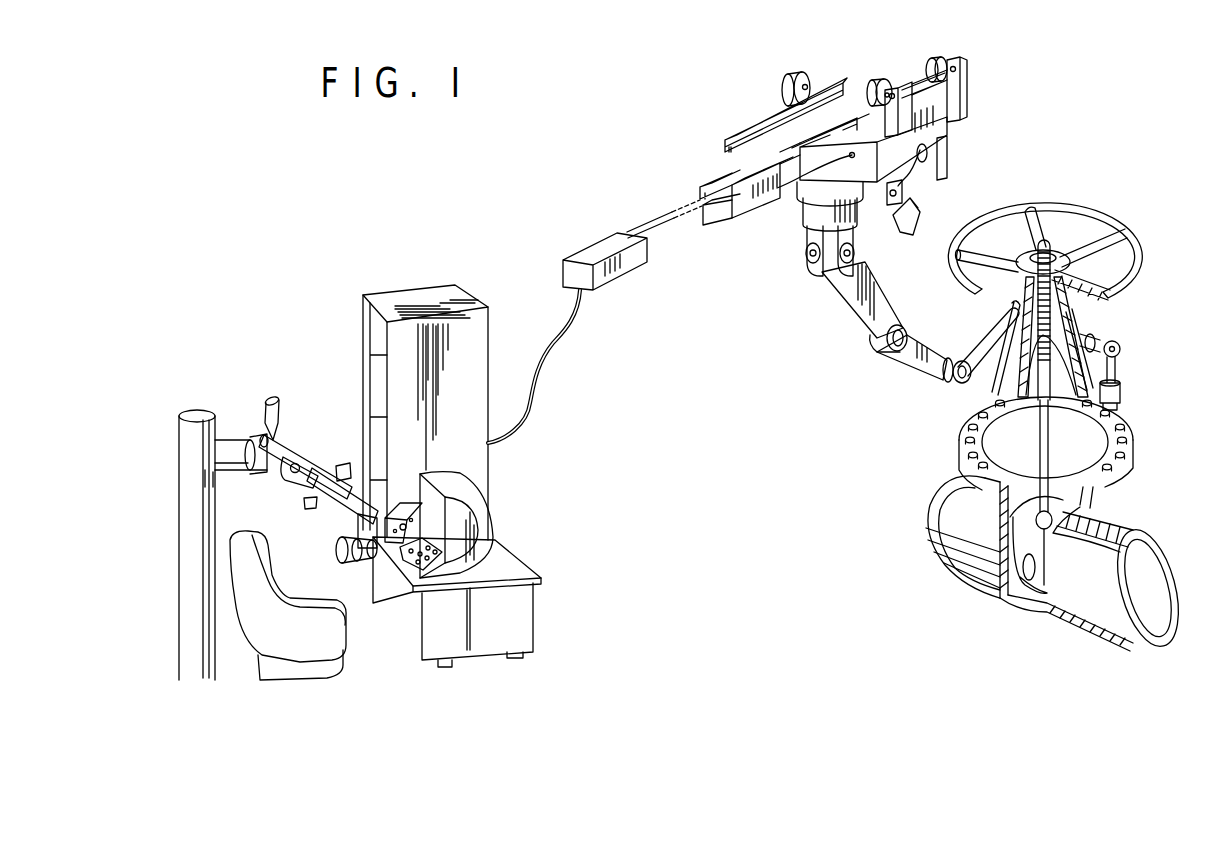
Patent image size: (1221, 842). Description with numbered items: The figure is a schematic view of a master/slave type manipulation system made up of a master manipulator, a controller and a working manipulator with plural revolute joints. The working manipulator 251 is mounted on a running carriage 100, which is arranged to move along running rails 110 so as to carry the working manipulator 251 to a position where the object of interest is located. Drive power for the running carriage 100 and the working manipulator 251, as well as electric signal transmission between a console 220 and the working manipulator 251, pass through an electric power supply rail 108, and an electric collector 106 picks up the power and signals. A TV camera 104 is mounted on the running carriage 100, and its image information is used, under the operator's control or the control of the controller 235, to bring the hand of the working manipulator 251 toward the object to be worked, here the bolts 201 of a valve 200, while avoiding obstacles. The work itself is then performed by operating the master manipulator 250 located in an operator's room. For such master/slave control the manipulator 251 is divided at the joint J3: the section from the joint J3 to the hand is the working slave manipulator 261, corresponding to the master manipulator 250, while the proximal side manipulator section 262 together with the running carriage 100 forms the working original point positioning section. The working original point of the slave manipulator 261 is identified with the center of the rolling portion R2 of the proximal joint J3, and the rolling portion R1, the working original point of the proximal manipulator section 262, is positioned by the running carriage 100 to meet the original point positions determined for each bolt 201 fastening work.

The running carriage 100 is at (960, 108).
The TV camera 104 is at (915, 201).
The electric collector 106 is at (713, 213).
The electric power supply rail 108 is at (642, 222).
The running rails 110 is at (750, 128).
The rolling portion R1 is at (810, 218).
The rolling portion R2 is at (960, 360).
The joint J3 is at (958, 386).
The valve 200 is at (1138, 313).
The bolts 201 is at (1137, 448).
The console 220 is at (493, 550).
The controller 235 is at (402, 295).
The master manipulator 250 is at (270, 398).
The working manipulator 251 is at (836, 330).
The working slave manipulator 261 is at (990, 350).
The proximal side manipulator section 262 is at (836, 293).